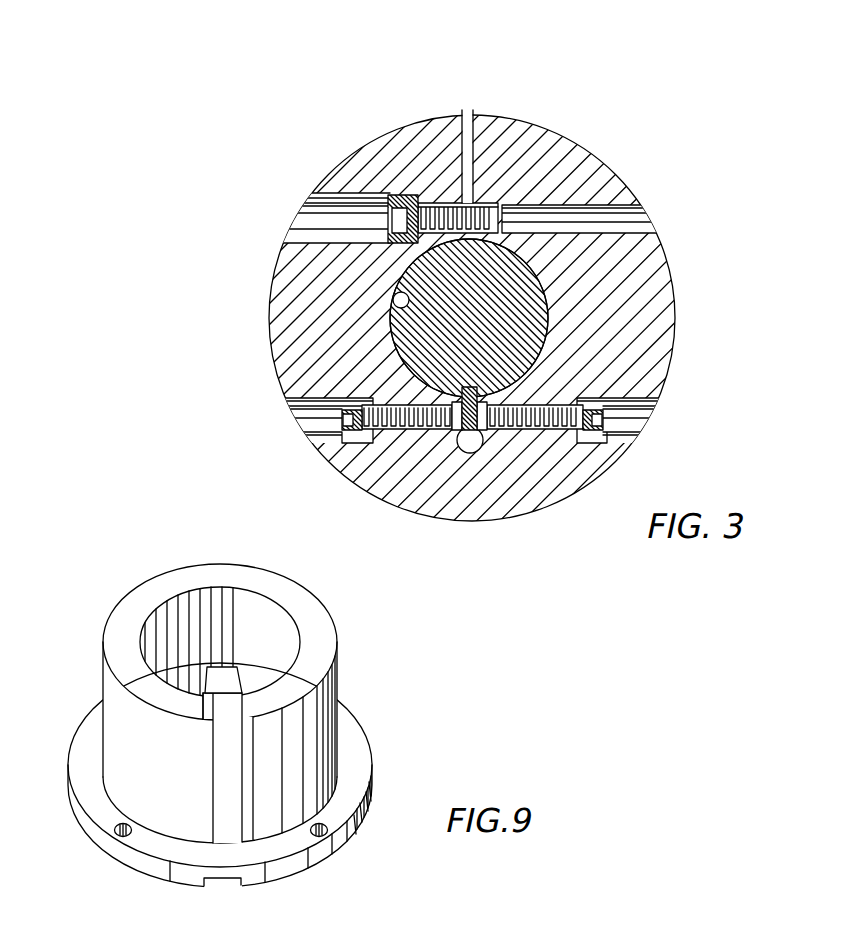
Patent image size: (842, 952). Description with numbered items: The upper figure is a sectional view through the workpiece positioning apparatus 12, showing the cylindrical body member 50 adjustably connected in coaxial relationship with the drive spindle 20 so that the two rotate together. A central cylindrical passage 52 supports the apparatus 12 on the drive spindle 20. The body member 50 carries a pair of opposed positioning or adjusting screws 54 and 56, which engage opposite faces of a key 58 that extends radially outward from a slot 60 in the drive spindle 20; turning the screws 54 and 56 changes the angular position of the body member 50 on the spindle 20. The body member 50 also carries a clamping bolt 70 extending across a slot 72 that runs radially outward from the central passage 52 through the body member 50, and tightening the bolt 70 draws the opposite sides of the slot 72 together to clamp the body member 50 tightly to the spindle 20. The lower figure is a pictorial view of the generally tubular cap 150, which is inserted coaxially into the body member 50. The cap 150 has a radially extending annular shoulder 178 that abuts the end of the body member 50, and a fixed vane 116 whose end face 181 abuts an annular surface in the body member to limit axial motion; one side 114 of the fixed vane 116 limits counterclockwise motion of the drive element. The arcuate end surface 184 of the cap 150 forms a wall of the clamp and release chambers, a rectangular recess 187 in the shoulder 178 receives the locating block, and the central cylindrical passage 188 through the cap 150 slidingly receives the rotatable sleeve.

In FIG. 3, the workpiece positioning apparatus 12 is at (421, 290).
In FIG. 3, the drive spindle 20 is at (391, 331).
In FIG. 3, the cylindrical body member 50 is at (270, 330).
In FIG. 3, the central cylindrical passage 52 is at (393, 301).
In FIG. 3, the positioning or adjusting screw 54 is at (356, 432).
In FIG. 3, the positioning or adjusting screw 56 is at (584, 432).
In FIG. 3, the key 58 is at (450, 472).
In FIG. 3, the slot 60 is at (470, 386).
In FIG. 3, the clamping bolt 70 is at (417, 197).
In FIG. 3, the slot 72 is at (467, 180).
In FIG. 9, the cap 150 is at (235, 719).
In FIG. 9, the side of fixed vane 114 is at (244, 700).
In FIG. 9, the fixed vane 116 is at (194, 716).
In FIG. 9, the annular shoulder 178 is at (343, 830).
In FIG. 9, the end face 181 is at (224, 681).
In FIG. 9, the arcuate end surface 184 is at (132, 683).
In FIG. 9, the rectangular recess 187 is at (229, 887).
In FIG. 9, the central cylindrical passage 188 is at (252, 609).